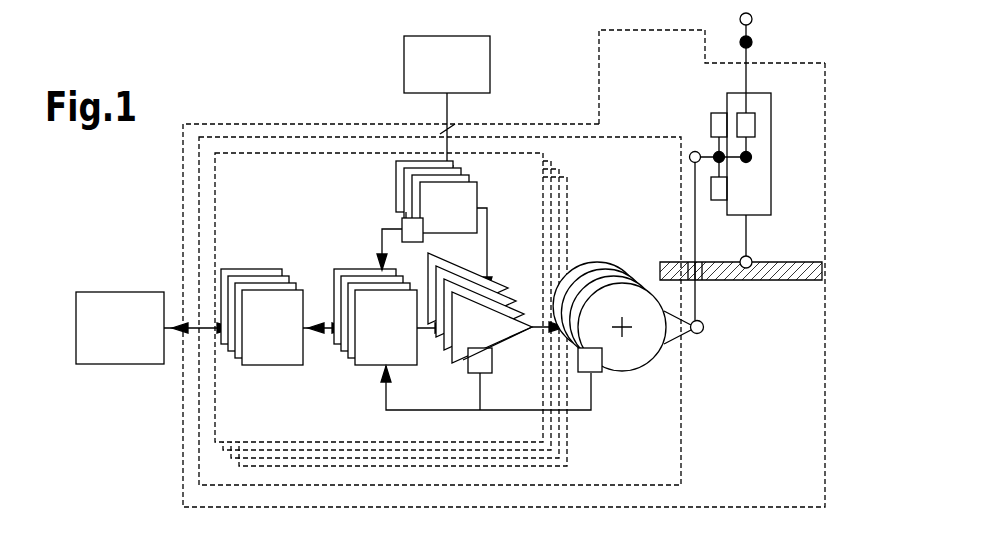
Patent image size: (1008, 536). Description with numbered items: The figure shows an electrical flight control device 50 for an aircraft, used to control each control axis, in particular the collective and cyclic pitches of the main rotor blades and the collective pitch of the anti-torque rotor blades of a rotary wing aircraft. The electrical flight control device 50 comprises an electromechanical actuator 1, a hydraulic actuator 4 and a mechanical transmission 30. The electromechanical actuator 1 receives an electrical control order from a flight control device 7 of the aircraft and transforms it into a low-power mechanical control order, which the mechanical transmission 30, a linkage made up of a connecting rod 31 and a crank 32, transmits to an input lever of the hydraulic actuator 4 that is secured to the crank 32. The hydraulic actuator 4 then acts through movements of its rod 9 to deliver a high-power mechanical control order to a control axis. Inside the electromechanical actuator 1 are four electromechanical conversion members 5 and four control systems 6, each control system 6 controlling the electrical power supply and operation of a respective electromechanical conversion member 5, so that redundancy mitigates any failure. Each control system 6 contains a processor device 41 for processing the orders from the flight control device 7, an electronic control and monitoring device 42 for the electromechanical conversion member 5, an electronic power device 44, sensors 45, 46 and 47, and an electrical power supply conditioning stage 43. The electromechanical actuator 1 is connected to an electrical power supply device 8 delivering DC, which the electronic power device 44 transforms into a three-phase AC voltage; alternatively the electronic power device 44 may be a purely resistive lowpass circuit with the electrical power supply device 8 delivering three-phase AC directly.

The electromechanical actuator 1 is at (240, 137).
The hydraulic actuator 4 is at (757, 185).
The electromechanical conversion member 5 is at (634, 372).
The control system 6 is at (215, 420).
The flight control device 7 is at (138, 292).
The electrical power supply device 8 is at (403, 77).
The rod 9 is at (749, 57).
The mechanical transmission 30 is at (700, 91).
The connecting rod 31 is at (700, 303).
The crank 32 is at (714, 152).
The processor device 41 is at (260, 365).
The electronic control and monitoring device 42 is at (371, 365).
The electrical power supply conditioning stage 43 is at (395, 172).
The electronic power device 44 is at (501, 333).
The sensor 45 is at (594, 373).
The sensor 46 is at (468, 362).
The sensor 47 is at (402, 222).
The electrical flight control device 50 is at (183, 480).